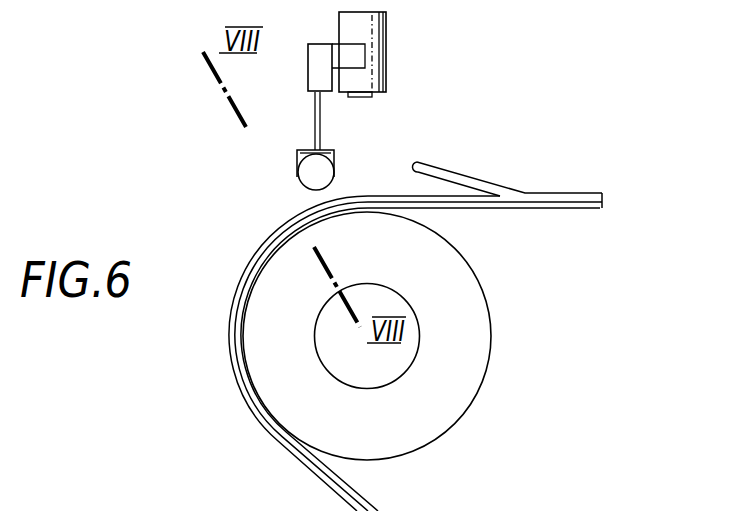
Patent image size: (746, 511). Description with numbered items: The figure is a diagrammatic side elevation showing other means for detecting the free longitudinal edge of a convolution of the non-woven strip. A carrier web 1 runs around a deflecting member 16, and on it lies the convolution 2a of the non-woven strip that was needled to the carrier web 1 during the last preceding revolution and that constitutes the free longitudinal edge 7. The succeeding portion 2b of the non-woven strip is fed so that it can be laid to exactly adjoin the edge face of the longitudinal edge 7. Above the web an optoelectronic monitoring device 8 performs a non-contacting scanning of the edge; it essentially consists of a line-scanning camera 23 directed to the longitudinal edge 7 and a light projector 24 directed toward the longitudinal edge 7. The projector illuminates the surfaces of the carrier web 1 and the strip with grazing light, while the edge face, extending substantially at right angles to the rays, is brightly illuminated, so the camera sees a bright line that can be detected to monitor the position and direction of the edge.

The carrier web 1 is at (520, 205).
The convolution of the non-woven strip 2a is at (452, 196).
The portion of the non-woven web 2b is at (443, 175).
The free longitudinal edge 7 is at (360, 200).
The optoelectronic monitoring device 8 is at (396, 40).
The deflecting member 16 is at (447, 390).
The line-scanning camera 23 is at (372, 74).
The light projector 24 is at (317, 173).